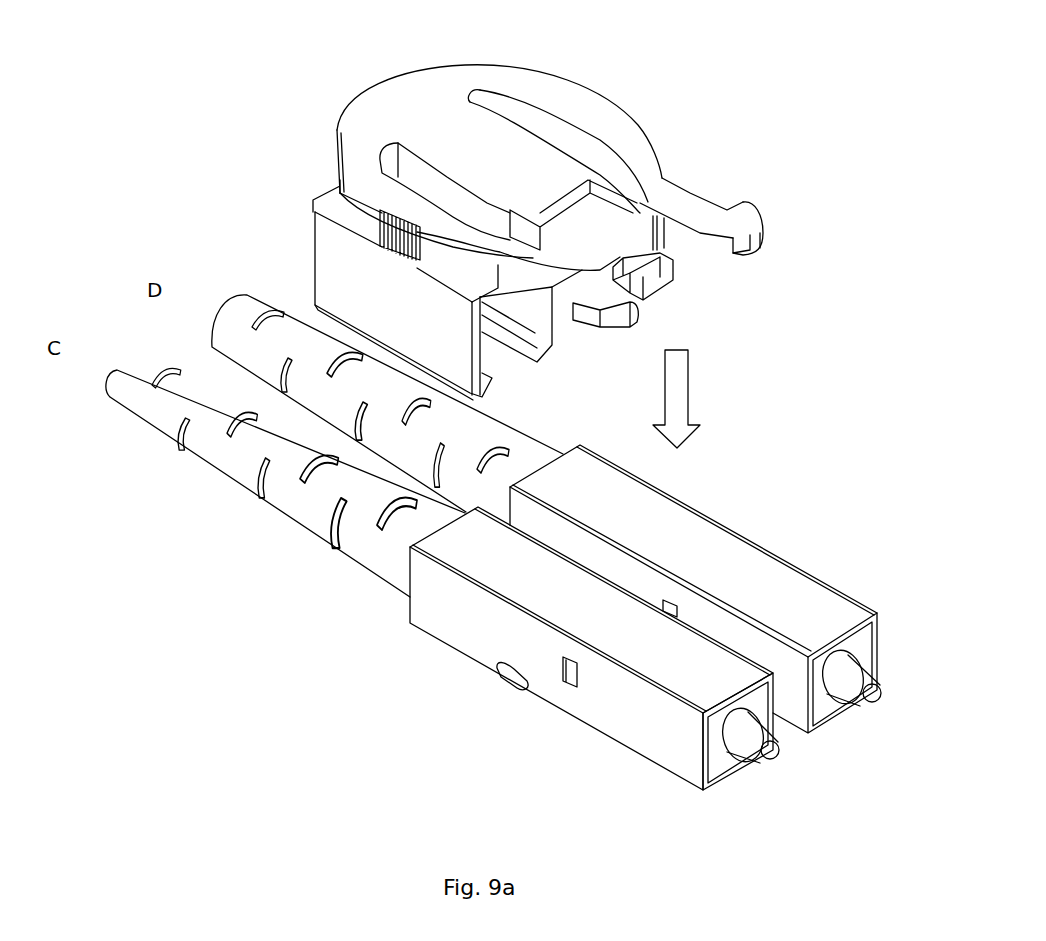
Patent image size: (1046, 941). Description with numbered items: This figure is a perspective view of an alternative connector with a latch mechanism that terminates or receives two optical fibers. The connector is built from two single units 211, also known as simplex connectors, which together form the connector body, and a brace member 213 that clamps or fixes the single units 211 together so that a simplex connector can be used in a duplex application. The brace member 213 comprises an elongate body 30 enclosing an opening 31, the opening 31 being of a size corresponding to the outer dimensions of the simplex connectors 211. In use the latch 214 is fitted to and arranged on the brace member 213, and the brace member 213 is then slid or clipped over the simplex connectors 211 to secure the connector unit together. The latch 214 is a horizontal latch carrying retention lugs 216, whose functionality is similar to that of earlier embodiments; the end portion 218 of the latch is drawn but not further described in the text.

The latch 214 is at (430, 64).
The retention lugs 216 is at (621, 112).
The hook end of arm 218 is at (751, 218).
The elongate body 30 is at (332, 240).
The brace member 213 is at (318, 260).
The single units 211 is at (579, 497).
The opening 31 is at (509, 356).